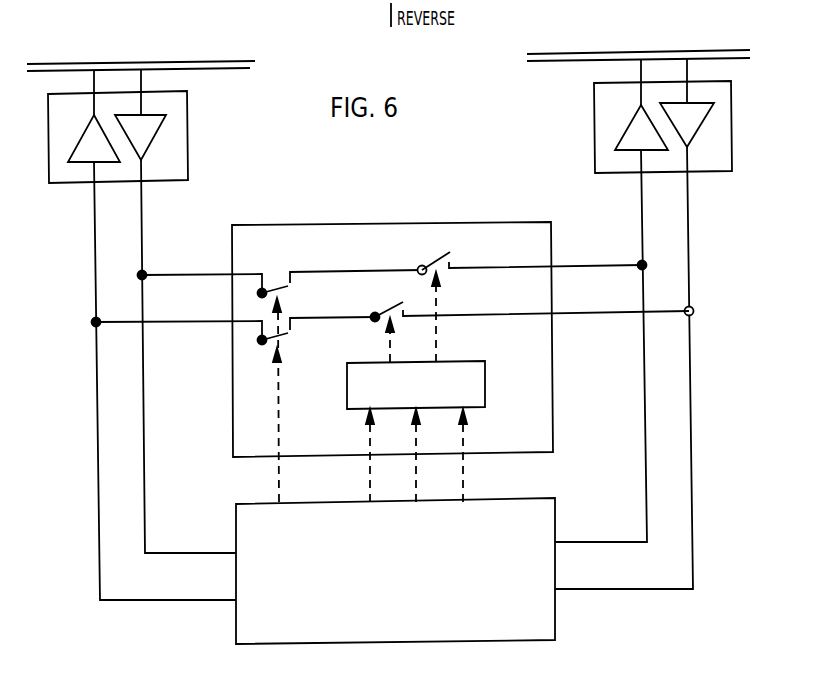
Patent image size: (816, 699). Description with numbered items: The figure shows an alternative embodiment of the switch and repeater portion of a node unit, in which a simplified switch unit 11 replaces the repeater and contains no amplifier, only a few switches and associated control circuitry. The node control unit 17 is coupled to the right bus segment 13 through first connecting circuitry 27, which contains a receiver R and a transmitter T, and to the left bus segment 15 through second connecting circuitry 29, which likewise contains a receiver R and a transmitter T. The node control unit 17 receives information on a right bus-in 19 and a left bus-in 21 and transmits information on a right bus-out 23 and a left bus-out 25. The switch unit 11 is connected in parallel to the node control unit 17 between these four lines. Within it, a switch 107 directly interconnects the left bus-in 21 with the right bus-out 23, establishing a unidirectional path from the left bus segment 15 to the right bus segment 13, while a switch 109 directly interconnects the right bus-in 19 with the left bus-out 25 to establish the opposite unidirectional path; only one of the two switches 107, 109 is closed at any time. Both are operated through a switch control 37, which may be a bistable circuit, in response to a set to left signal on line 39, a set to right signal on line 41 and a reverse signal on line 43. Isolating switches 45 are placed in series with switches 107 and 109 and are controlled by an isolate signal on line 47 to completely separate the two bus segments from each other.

The left bus segment 15 is at (71, 61).
The right bus segment 13 is at (588, 51).
The second connecting circuitry 29 is at (188, 134).
The first connecting circuitry 27 is at (733, 123).
The left bus-out 25 is at (94, 222).
The left bus-in 21 is at (142, 221).
The right bus-out 23 is at (642, 212).
The right bus-in 19 is at (689, 212).
The switch unit 11 is at (514, 222).
The isolating switches 45 is at (289, 292).
The switch 107 is at (530, 296).
The switch 109 is at (530, 321).
The switch control 37 is at (458, 355).
The isolate signal line 47 is at (279, 478).
The set to left line 39 is at (370, 478).
The reverse line 43 is at (416, 474).
The set to right line 41 is at (463, 474).
The node control unit 17 is at (556, 622).